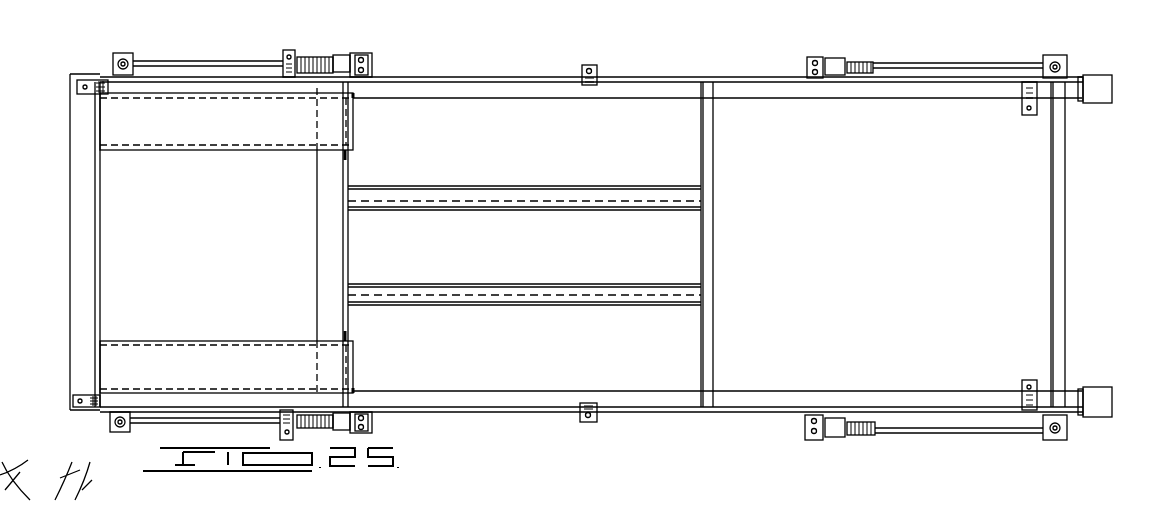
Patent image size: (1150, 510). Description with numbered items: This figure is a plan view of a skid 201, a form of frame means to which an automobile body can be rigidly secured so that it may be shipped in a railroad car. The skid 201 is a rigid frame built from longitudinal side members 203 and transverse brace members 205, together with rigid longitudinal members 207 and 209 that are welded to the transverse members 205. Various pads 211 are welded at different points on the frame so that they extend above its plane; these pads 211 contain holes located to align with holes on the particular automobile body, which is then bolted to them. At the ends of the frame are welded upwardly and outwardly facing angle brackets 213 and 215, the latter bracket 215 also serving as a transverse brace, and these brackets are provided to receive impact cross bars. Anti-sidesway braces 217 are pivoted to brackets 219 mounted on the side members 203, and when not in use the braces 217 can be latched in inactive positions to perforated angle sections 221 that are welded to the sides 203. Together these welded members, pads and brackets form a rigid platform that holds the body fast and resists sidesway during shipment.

The skid 201 is at (808, 58).
The longitudinal side members 203 is at (780, 77).
The transverse brace members 205 is at (345, 258).
The rigid longitudinal members 207 is at (572, 200).
The rigid longitudinal members 209 is at (247, 137).
The pads 211 is at (100, 78).
The angle brackets 213 is at (1095, 104).
The angle bracket 215 is at (95, 258).
The anti-sidesway braces 217 is at (207, 60).
The brackets 219 is at (1066, 58).
The perforated angle sections 221 is at (805, 430).